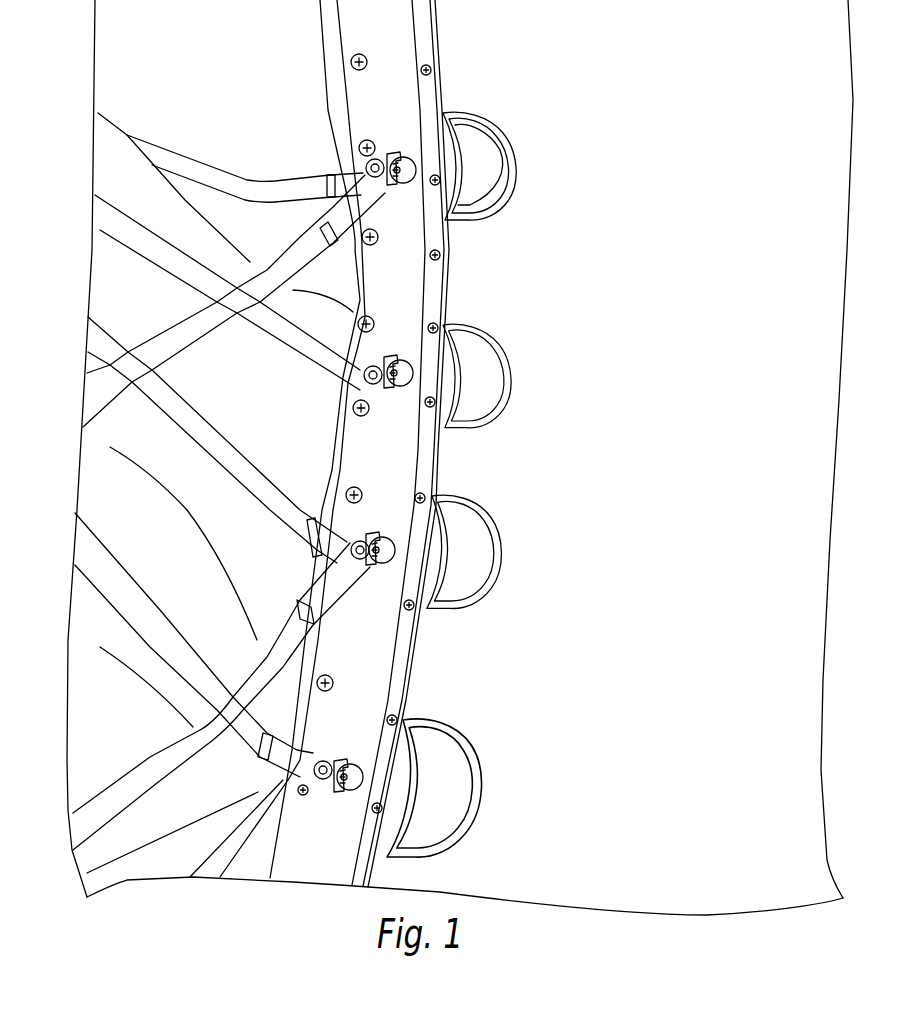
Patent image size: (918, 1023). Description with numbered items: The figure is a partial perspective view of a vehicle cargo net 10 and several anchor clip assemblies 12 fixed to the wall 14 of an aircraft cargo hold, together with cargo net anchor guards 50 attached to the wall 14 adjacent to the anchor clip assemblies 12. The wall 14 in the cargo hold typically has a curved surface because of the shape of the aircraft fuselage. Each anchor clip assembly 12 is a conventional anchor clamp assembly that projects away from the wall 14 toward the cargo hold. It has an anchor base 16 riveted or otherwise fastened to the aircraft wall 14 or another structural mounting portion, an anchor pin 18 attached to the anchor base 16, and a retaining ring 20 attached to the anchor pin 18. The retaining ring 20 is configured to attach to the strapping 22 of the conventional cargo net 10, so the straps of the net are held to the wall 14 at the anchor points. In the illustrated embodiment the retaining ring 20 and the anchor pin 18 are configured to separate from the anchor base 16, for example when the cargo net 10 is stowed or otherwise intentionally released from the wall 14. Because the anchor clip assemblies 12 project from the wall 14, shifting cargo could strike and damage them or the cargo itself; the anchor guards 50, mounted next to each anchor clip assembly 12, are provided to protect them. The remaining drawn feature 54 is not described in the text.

The vehicle cargo net 10 is at (183, 163).
The anchor clip assembly 12 is at (408, 150).
The wall 14 is at (669, 228).
The anchor base 16 is at (387, 558).
The anchor pin 18 is at (347, 760).
The retaining ring 20 is at (317, 790).
The strapping 22 is at (310, 250).
The cargo net anchor guard 50 is at (497, 152).
The D-ring inner portion 54 is at (493, 180).